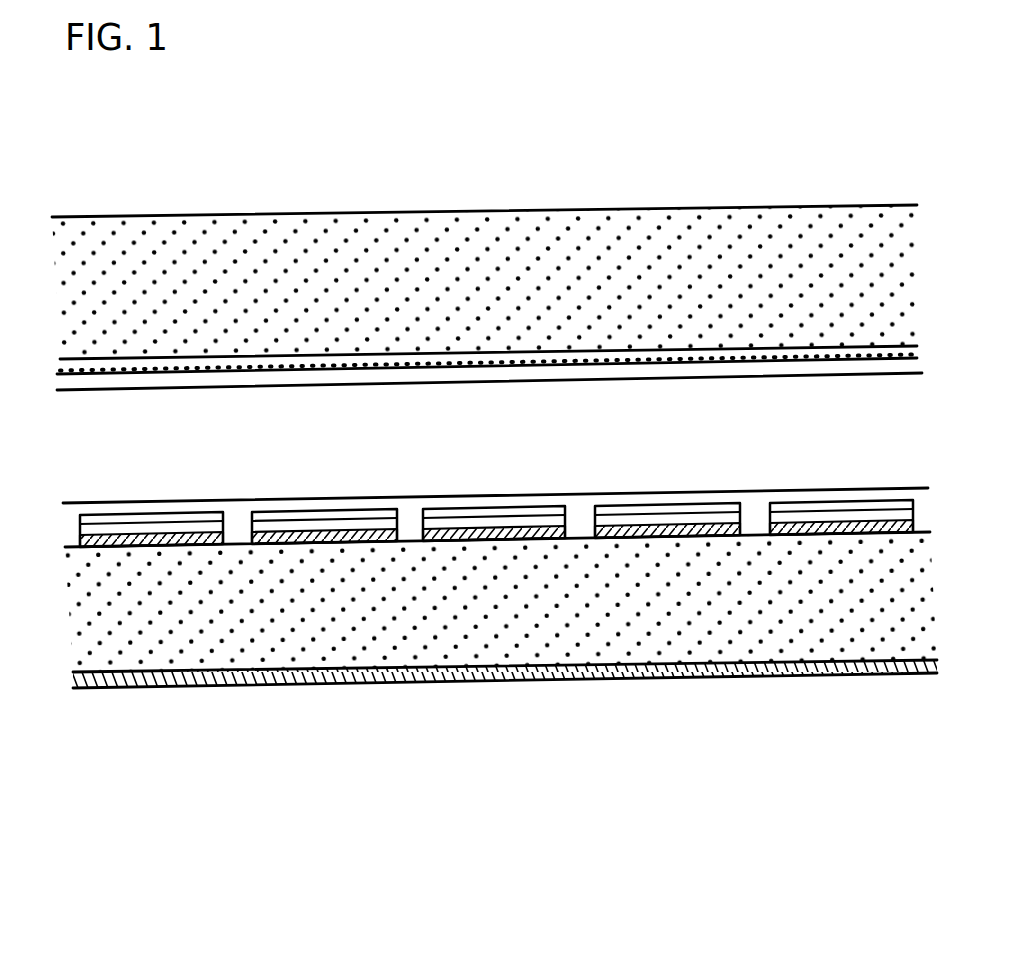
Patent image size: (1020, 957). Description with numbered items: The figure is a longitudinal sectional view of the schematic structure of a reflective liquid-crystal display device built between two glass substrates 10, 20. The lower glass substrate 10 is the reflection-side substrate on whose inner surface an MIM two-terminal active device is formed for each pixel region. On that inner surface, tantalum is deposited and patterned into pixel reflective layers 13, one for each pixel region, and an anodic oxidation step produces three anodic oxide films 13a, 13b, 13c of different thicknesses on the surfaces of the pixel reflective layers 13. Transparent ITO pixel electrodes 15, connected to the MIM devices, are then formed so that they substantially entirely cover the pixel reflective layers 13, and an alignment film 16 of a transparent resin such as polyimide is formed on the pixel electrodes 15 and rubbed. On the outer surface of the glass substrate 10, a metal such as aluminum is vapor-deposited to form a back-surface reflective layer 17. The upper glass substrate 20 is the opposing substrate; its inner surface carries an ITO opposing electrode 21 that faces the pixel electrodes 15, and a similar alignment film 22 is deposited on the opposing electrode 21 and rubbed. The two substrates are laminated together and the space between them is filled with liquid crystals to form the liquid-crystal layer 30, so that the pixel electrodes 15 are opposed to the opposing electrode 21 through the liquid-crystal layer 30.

The glass substrate 10 is at (660, 637).
The pixel reflective layer 13 is at (712, 528).
The anodic oxide film 13a is at (130, 526).
The anodic oxide film 13b is at (282, 538).
The anodic oxide film 13c is at (518, 530).
The pixel electrode 15 is at (297, 514).
The alignment film 16 is at (449, 496).
The back-surface reflective layer 17 is at (848, 667).
The glass substrate 20 is at (695, 233).
The opposing electrode 21 is at (583, 352).
The alignment film 22 is at (376, 378).
The liquid-crystal layer 30 is at (828, 432).